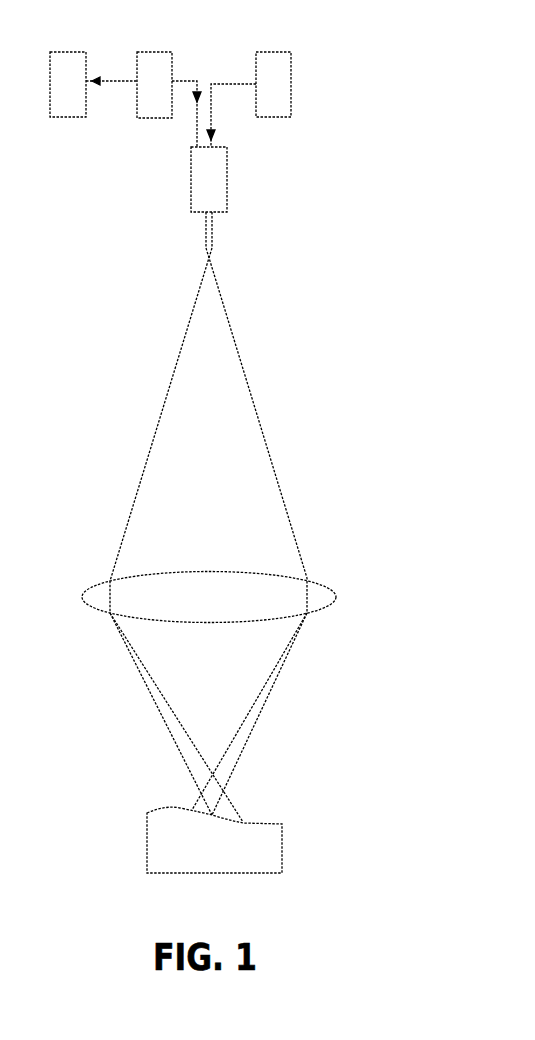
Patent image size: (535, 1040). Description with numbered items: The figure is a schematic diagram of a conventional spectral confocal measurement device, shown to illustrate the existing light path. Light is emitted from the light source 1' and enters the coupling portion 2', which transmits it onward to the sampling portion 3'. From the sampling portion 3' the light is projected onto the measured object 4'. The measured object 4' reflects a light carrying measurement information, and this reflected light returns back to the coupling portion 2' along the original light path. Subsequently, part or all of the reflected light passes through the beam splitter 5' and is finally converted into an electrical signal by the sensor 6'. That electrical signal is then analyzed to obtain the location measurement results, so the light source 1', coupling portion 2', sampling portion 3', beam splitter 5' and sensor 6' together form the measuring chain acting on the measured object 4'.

The light source 1' is at (277, 60).
The coupling portion 2' is at (246, 179).
The sampling portion 3' is at (246, 623).
The measured object 4' is at (276, 840).
The beam splitter 5' is at (157, 60).
The sensor 6' is at (70, 60).